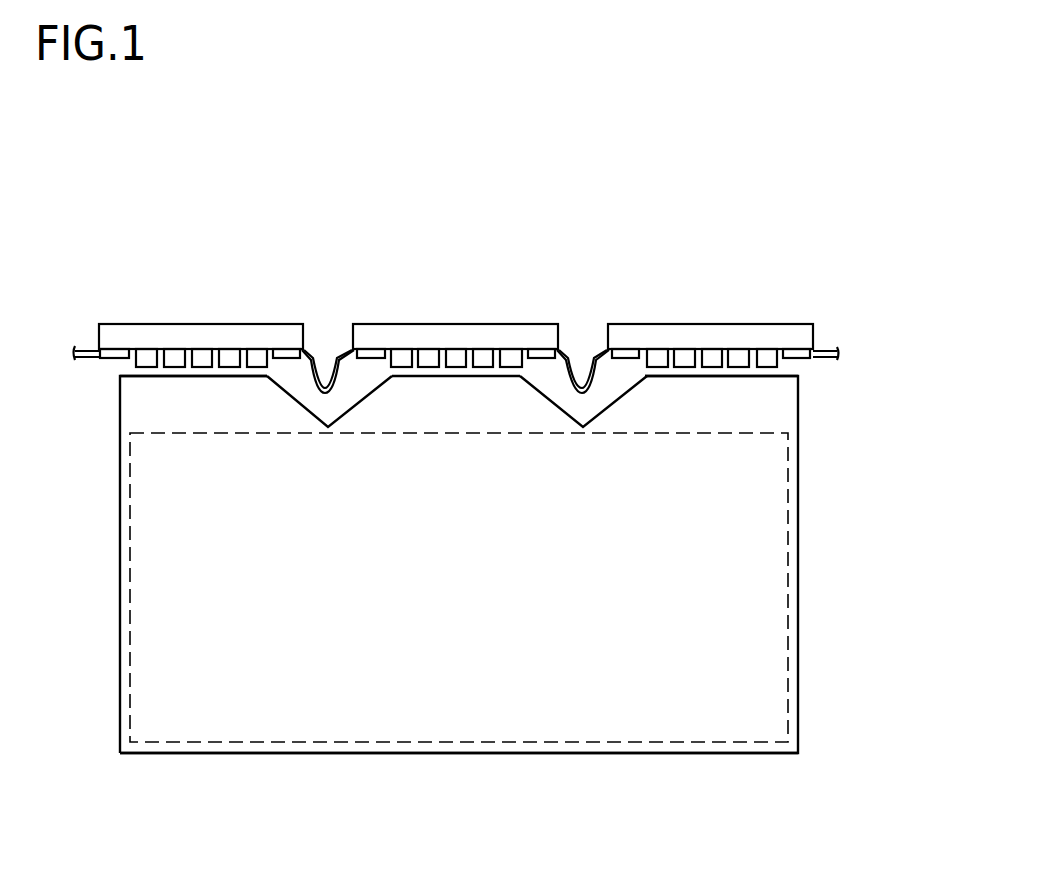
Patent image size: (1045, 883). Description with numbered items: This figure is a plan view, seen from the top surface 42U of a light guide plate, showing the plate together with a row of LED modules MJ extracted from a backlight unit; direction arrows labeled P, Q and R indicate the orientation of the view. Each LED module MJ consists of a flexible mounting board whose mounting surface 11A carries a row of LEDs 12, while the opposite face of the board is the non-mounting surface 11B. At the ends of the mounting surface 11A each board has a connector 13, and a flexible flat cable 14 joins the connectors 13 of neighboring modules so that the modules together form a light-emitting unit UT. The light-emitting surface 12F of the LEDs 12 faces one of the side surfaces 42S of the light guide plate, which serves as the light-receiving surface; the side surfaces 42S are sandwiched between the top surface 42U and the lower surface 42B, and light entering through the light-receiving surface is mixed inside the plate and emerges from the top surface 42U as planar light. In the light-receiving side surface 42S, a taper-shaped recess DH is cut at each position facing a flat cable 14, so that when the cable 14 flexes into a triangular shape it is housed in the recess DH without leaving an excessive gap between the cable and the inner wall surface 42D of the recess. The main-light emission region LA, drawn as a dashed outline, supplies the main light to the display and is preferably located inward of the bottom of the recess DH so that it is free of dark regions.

The mounting surface 11A is at (813, 347).
The non-mounting surface 11B is at (813, 324).
The LED 12 is at (785, 358).
The light-emitting surface 12F is at (783, 357).
The connector 13 is at (777, 360).
The flexible flat cable 14 is at (324, 384).
The side surface 42S is at (130, 372).
The top surface 42U is at (798, 623).
The lower surface 42B is at (798, 677).
The inner wall surface 42D is at (318, 418).
The recess DH is at (594, 410).
The main-light emission region LA is at (716, 433).
The light-emitting unit UT is at (813, 253).
The LED module MJ is at (303, 310).
The P direction P is at (840, 142).
The Q direction Q is at (811, 156).
The R direction R is at (801, 180).